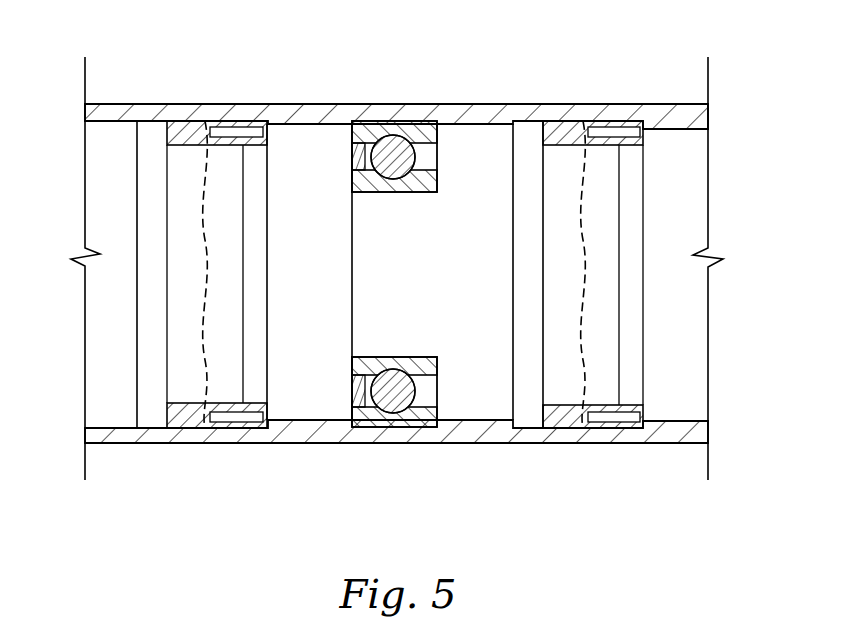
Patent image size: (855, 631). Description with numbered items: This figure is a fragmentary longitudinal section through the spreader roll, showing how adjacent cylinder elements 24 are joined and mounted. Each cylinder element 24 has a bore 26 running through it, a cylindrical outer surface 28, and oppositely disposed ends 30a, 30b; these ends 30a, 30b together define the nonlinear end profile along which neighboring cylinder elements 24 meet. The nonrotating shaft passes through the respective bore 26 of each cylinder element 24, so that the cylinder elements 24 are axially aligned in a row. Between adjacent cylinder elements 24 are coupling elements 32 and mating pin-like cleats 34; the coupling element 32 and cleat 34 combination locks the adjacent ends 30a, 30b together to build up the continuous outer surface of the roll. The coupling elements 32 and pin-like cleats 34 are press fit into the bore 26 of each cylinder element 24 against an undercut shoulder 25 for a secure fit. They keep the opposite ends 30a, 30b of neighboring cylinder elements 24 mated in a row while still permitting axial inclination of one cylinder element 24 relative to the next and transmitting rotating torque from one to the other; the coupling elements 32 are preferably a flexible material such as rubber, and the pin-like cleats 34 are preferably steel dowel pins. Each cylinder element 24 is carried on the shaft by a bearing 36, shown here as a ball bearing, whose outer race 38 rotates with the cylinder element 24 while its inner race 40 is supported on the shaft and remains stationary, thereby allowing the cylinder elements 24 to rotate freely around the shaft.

The cylinder element 24 is at (222, 101).
The undercut shoulder 25 is at (292, 122).
The bore 26 is at (497, 243).
The cylindrical outer surface 28 is at (367, 105).
The end 30a is at (205, 325).
The end 30b is at (587, 358).
The coupling element 32 is at (178, 443).
The pin-like cleat 34 is at (606, 422).
The bearing 36 is at (440, 165).
The outer race 38 is at (401, 150).
The inner race 40 is at (440, 188).